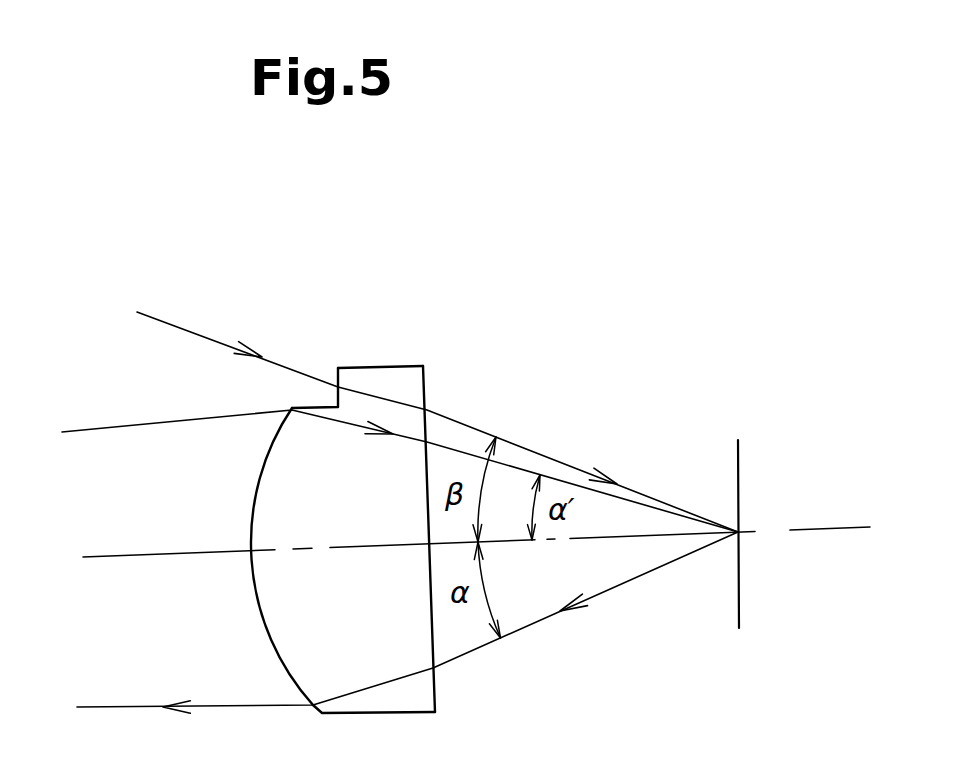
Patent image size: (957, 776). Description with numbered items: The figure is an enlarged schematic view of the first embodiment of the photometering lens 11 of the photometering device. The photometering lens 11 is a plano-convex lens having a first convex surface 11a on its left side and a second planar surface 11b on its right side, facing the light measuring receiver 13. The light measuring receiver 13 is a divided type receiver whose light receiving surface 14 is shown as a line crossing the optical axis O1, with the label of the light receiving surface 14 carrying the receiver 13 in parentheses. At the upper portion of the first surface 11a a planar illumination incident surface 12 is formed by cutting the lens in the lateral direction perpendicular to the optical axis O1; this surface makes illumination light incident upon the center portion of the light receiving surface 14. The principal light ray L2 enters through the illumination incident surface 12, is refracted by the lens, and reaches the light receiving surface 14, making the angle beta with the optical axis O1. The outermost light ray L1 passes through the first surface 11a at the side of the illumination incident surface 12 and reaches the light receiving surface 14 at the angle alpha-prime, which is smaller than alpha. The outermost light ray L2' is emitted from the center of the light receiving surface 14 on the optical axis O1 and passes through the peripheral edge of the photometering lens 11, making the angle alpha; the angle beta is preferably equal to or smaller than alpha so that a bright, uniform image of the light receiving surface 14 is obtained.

The photometering lens 11 is at (331, 490).
The first convex surface 11a is at (257, 600).
The second planar surface 11b is at (435, 636).
The illumination incident surface 12 is at (336, 369).
The light measuring receiver 13 is at (738, 473).
The light receiving surface 14 is at (704, 489).
The optical axis O1 is at (454, 554).
The outermost light ray L1 is at (375, 471).
The principal light ray L2 is at (415, 410).
The outermost light ray L2' is at (380, 627).